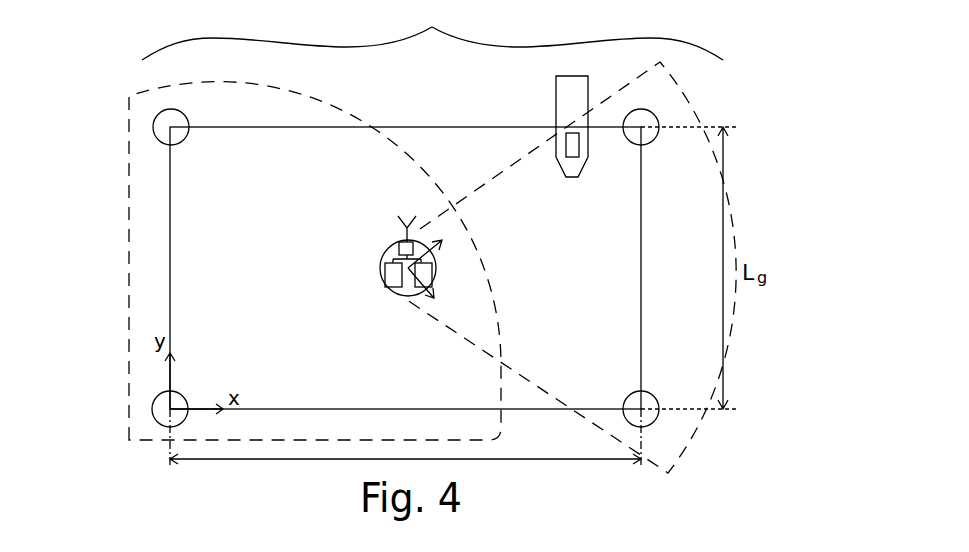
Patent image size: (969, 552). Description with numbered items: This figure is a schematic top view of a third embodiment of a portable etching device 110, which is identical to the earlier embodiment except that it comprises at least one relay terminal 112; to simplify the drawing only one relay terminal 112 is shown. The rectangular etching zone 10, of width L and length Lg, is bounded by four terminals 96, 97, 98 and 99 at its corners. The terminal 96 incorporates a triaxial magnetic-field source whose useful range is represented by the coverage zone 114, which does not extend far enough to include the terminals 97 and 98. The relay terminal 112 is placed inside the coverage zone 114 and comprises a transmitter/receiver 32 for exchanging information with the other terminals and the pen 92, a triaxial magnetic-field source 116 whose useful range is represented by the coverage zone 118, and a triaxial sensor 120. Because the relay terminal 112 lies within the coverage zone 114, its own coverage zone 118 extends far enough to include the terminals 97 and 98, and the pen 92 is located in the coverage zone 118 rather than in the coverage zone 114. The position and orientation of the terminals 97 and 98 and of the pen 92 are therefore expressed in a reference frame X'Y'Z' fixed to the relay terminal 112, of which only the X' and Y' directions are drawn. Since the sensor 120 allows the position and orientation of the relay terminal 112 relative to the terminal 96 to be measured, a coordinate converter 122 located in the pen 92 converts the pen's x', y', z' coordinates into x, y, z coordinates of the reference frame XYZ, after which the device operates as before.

The etching zone 10 is at (641, 273).
The transmitter/receiver 32 is at (400, 247).
The pen 92 is at (556, 112).
The terminal 96 is at (152, 409).
The terminal 97 is at (658, 415).
The terminal 98 is at (657, 115).
The terminal 99 is at (153, 125).
The etching device 110 is at (432, 31).
The relay terminal 112 is at (381, 262).
The coverage zone 114 is at (128, 236).
The triaxial magnetic-field source 116 is at (436, 268).
The coverage zone 118 is at (622, 87).
The triaxial sensor 120 is at (386, 284).
The coordinate converter 122 is at (579, 147).